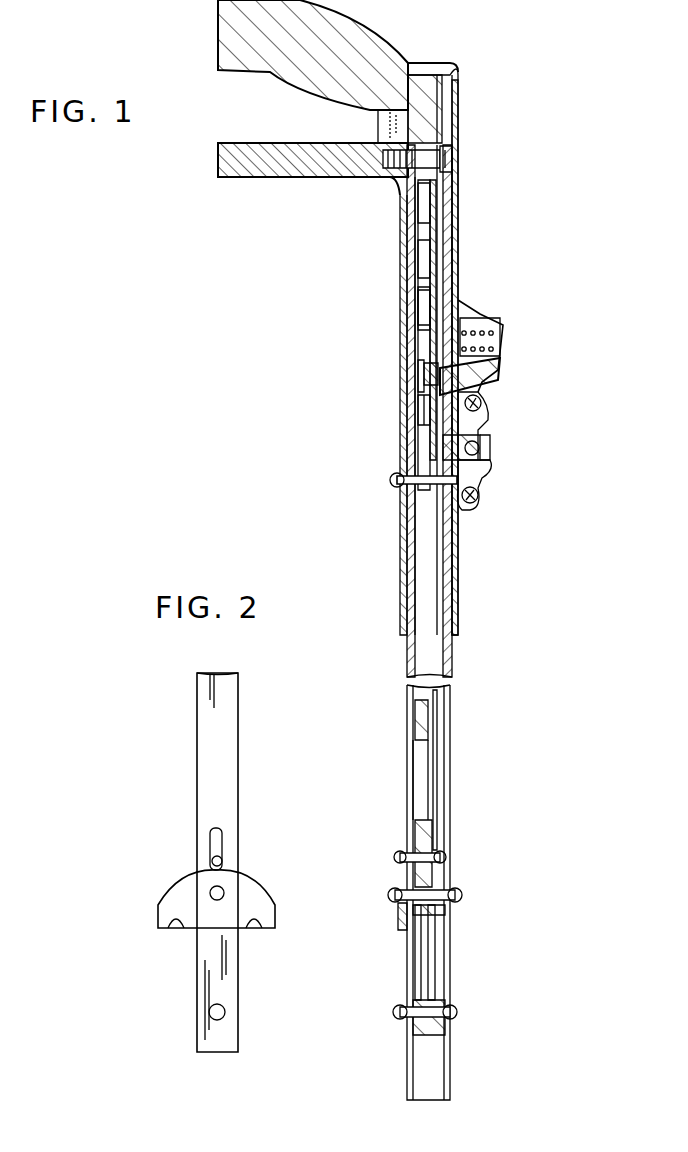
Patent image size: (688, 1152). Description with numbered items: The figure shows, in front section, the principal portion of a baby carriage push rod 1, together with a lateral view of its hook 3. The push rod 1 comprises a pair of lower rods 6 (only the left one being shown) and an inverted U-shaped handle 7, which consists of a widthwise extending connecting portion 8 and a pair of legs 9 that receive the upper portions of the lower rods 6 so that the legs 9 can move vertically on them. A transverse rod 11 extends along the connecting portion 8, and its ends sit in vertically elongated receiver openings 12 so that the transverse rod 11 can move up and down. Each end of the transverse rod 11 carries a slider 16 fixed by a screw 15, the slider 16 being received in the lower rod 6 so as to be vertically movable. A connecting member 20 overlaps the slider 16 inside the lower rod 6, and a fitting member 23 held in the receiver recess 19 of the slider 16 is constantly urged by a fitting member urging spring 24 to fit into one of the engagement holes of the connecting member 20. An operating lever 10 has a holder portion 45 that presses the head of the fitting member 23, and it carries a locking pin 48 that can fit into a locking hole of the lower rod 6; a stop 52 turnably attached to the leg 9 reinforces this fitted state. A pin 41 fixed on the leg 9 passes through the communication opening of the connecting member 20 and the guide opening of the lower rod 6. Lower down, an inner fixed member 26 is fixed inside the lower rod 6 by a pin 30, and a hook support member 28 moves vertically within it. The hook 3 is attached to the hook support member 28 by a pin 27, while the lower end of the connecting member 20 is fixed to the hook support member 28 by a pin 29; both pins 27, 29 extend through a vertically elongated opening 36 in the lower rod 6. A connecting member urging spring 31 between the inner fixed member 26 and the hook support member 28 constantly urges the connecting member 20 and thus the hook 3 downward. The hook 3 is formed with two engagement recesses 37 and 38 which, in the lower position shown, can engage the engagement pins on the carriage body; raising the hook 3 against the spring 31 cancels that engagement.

In FIG. 1, the push rod 1 is at (300, 286).
In FIG. 1, the hook 3 is at (398, 918).
In FIG. 2, the hook 3 is at (268, 878).
In FIG. 1, the lower rod 6 is at (454, 654).
In FIG. 2, the lower rod 6 is at (230, 780).
In FIG. 1, the handle 7 is at (462, 207).
In FIG. 1, the widthwise extending connecting portion 8 is at (238, 70).
In FIG. 1, the leg 9 is at (448, 255).
In FIG. 1, the operating lever 10 is at (506, 378).
In FIG. 1, the transverse rod 11 is at (246, 178).
In FIG. 1, the receiver opening 12 is at (384, 124).
In FIG. 1, the screw 15 is at (445, 146).
In FIG. 1, the slider 16 is at (404, 240).
In FIG. 1, the receiver recess 19 is at (424, 372).
In FIG. 1, the connecting member 20 is at (430, 305).
In FIG. 1, the fitting member 23 is at (420, 415).
In FIG. 1, the fitting member urging spring 24 is at (420, 380).
In FIG. 1, the inner fixed member 26 is at (432, 932).
In FIG. 1, the pin 27 is at (437, 895).
In FIG. 2, the pin 27 is at (212, 890).
In FIG. 1, the hook support member 28 is at (435, 845).
In FIG. 1, the pin 29 is at (415, 855).
In FIG. 2, the pin 29 is at (222, 858).
In FIG. 1, the pin 30 is at (412, 1013).
In FIG. 2, the pin 30 is at (224, 1016).
In FIG. 1, the connecting member urging spring 31 is at (450, 758).
In FIG. 2, the vertically elongated opening 36 is at (212, 830).
In FIG. 2, the engagement recess 37 is at (258, 930).
In FIG. 2, the engagement recess 38 is at (178, 930).
In FIG. 1, the pin 41 is at (394, 488).
In FIG. 1, the holder portion 45 is at (484, 357).
In FIG. 1, the locking pin 48 is at (488, 440).
In FIG. 1, the stop 52 is at (492, 480).